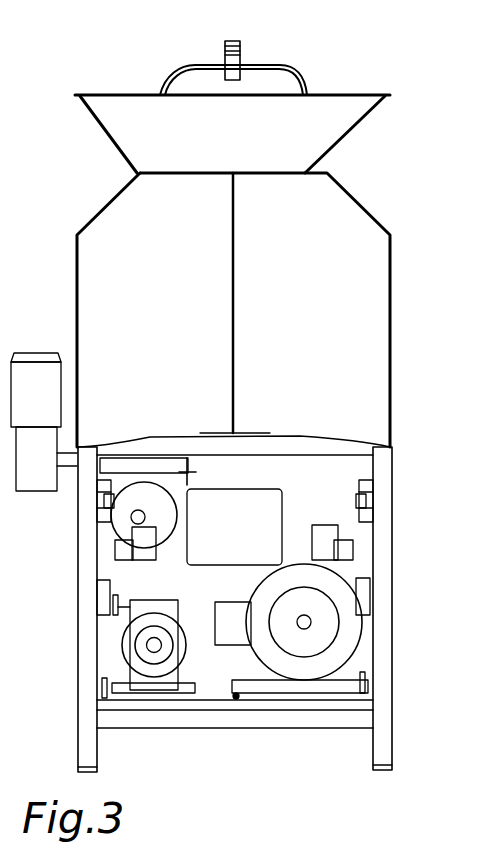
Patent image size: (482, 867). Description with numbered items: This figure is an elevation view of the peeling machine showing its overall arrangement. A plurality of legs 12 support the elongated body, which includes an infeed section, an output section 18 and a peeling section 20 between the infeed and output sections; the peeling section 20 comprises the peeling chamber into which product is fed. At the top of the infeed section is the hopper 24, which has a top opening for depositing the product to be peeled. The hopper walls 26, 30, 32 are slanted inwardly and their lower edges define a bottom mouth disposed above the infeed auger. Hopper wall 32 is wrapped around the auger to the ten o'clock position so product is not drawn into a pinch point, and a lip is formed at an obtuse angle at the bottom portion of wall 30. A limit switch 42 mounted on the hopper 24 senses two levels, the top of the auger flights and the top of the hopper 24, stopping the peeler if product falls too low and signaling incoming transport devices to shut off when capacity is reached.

The legs 12 is at (86, 752).
The output section 18 is at (481, 655).
The peeling section 20 is at (384, 230).
The hopper 24 is at (386, 93).
The hopper wall 26 is at (118, 147).
The hopper wall 30 is at (342, 142).
The hopper wall 32 is at (258, 144).
The limit switch 42 is at (240, 48).